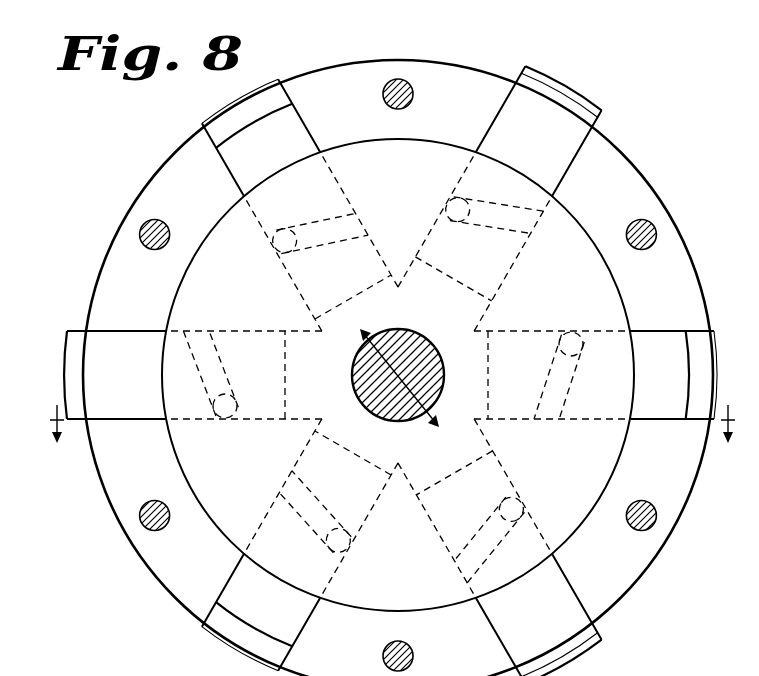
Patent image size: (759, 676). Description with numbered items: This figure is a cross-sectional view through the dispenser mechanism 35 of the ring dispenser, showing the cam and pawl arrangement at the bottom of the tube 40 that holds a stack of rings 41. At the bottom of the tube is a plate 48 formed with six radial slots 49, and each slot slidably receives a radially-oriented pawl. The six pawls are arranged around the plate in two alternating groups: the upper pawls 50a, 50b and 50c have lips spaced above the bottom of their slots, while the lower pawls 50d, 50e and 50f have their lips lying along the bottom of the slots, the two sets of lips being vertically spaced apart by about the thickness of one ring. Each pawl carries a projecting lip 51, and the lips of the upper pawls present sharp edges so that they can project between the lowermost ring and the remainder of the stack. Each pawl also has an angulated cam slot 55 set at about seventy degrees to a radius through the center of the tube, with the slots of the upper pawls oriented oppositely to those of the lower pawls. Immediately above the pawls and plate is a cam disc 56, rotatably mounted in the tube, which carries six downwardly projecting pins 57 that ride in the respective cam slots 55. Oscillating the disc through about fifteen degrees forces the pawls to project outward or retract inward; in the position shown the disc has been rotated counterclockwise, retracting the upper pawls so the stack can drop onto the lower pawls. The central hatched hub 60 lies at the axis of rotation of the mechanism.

The hub assembly 35 is at (703, 64).
The plate 48 is at (637, 186).
The radial slot 49 is at (660, 329).
The upper pawl 50a is at (605, 369).
The upper pawl 50b is at (299, 204).
The upper pawl 50c is at (300, 545).
The lower pawl 50d is at (500, 547).
The lower pawl 50e is at (500, 197).
The lower pawl 50f is at (193, 375).
The projecting lip 51 is at (278, 654).
The cam slot 55 is at (566, 400).
The cam disc 56 is at (586, 528).
The pin 57 is at (528, 526).
The central shaft 60 is at (422, 342).
The tube 40 is at (696, 675).
The ring 41 is at (746, 675).